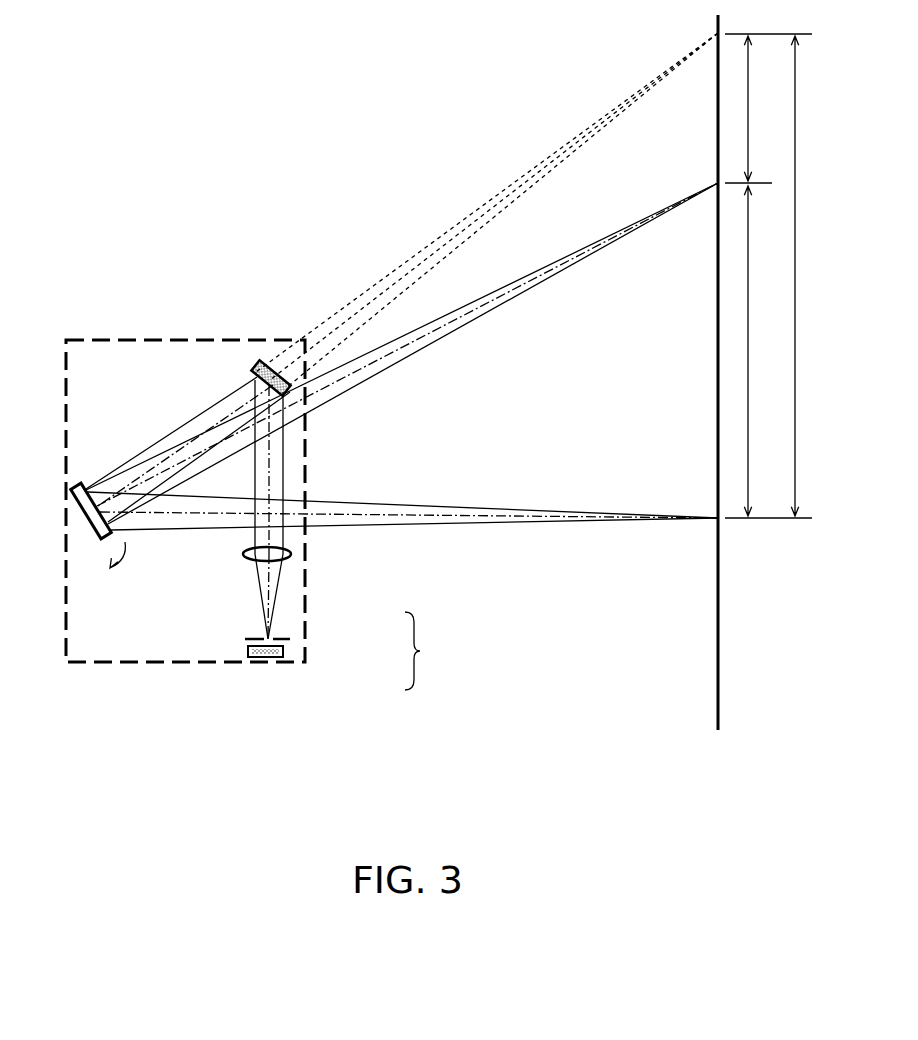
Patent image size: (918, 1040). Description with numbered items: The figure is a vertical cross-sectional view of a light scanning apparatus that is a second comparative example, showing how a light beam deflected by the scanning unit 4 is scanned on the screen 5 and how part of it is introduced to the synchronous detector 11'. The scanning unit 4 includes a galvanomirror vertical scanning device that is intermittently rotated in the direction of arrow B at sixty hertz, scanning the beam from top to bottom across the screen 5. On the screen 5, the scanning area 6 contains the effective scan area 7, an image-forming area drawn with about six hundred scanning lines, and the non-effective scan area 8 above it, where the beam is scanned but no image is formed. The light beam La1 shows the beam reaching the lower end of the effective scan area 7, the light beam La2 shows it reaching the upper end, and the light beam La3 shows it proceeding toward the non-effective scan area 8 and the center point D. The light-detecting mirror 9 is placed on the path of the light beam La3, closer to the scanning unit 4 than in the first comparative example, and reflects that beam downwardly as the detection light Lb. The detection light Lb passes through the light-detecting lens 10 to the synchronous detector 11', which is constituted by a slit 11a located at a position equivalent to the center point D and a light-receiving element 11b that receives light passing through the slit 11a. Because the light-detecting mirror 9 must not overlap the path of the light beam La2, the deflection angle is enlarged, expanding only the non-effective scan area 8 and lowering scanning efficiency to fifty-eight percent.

The scanning unit 4 is at (88, 472).
The screen 5 is at (699, 398).
The scanning area 6 is at (802, 276).
The effective scan area 7 is at (758, 351).
The non-effective scan area 8 is at (758, 108).
The light-detecting mirror 9 is at (259, 347).
The light-detecting lens 10 is at (308, 558).
The slit 11a is at (302, 642).
The light-receiving element 11b is at (300, 657).
The synchronous detector 11' is at (430, 651).
The arrow B is at (101, 561).
The center point D is at (688, 32).
The light beam La1 is at (155, 527).
The light beam La2 is at (218, 468).
The light beam La3 is at (181, 428).
The detection light Lb is at (293, 466).